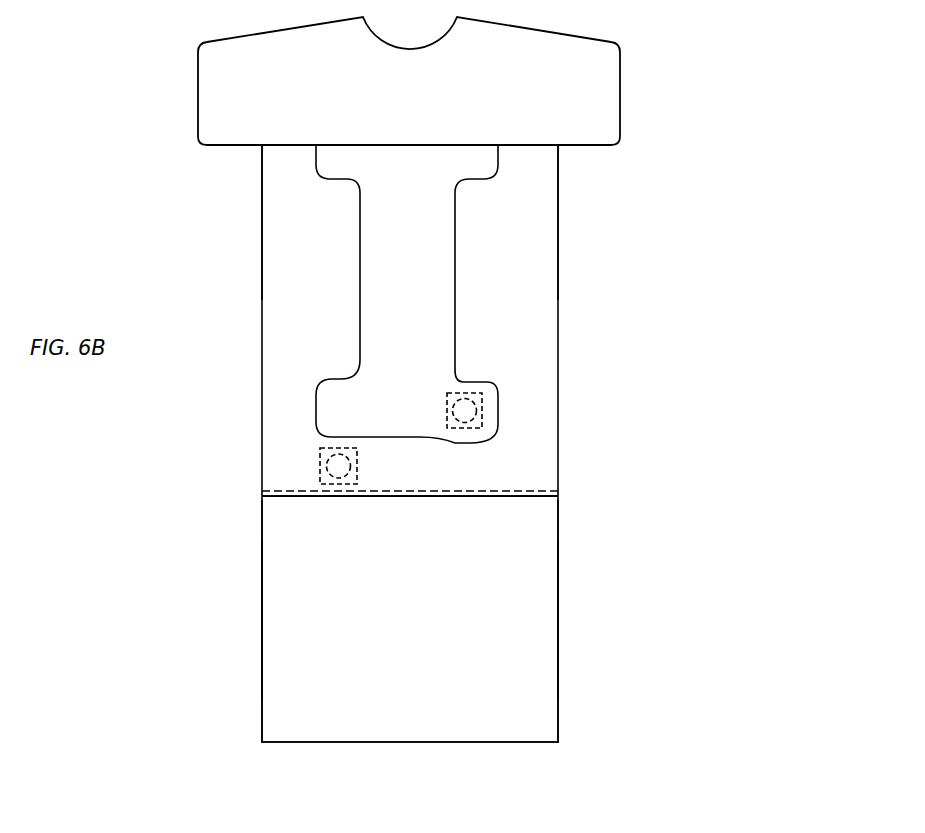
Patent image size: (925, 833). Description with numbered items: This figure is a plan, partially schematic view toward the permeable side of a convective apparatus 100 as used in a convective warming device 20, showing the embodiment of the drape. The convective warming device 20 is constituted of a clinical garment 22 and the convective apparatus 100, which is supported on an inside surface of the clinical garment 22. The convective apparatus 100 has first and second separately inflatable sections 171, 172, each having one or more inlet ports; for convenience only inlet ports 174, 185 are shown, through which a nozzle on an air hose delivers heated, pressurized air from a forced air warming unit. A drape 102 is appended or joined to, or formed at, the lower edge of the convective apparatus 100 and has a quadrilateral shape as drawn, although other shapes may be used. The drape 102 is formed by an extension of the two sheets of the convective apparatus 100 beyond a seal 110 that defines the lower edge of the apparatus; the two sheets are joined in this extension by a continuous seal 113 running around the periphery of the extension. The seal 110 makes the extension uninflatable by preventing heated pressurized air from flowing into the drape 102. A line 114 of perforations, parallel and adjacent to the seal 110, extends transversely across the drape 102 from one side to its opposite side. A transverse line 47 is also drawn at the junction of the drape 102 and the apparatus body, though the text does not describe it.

The convective warming device 20 is at (762, 216).
The clinical garment 22 is at (605, 40).
The joint line 47 is at (298, 497).
The convective apparatus 100 is at (535, 266).
The drape 102 is at (288, 672).
The seal 110 is at (503, 496).
The continuous seal 113 is at (258, 604).
The line of perforations 114 is at (530, 491).
The first inflatable section 171 is at (497, 161).
The second inflatable section 172 is at (273, 197).
The inlet port 174 is at (464, 393).
The inlet port 185 is at (320, 466).